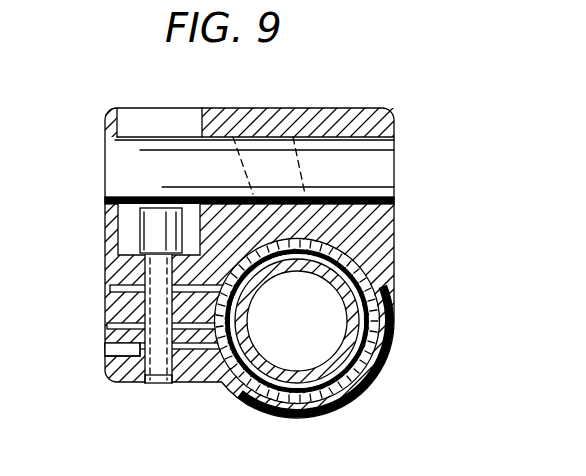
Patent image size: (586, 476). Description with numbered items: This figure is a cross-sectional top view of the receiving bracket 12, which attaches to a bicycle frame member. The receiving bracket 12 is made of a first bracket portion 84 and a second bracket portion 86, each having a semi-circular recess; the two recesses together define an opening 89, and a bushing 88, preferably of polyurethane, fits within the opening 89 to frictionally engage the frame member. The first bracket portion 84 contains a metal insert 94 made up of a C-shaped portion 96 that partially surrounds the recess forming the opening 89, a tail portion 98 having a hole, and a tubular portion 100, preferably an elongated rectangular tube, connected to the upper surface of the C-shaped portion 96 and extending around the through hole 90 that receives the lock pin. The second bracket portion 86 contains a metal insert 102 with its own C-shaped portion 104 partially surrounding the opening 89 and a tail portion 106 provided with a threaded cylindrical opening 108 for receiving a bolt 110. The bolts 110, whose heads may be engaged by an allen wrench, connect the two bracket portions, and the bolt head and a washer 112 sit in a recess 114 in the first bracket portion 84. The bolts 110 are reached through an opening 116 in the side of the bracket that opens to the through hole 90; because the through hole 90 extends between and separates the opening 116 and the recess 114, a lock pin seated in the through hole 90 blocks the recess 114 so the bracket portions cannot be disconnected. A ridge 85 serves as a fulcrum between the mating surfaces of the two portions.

The receiving bracket 12 is at (372, 390).
The first bracket portion 84 is at (394, 213).
The ridge 85 is at (108, 313).
The second bracket portion 86 is at (207, 383).
The bushing 88 is at (383, 319).
The opening 89 is at (310, 352).
The through hole 90 is at (328, 150).
The metal insert 94 is at (383, 292).
The C-shaped portion 96 is at (388, 245).
The tail portion 98 is at (106, 275).
The tubular portion 100 is at (267, 110).
The metal insert 102 is at (375, 345).
The C-shaped portion 104 is at (297, 418).
The tail portion 106 is at (115, 380).
The threaded cylindrical opening 108 is at (168, 368).
The bolt 110 is at (106, 333).
The washer 112 is at (120, 250).
The recess 114 is at (117, 203).
The opening 116 is at (150, 120).